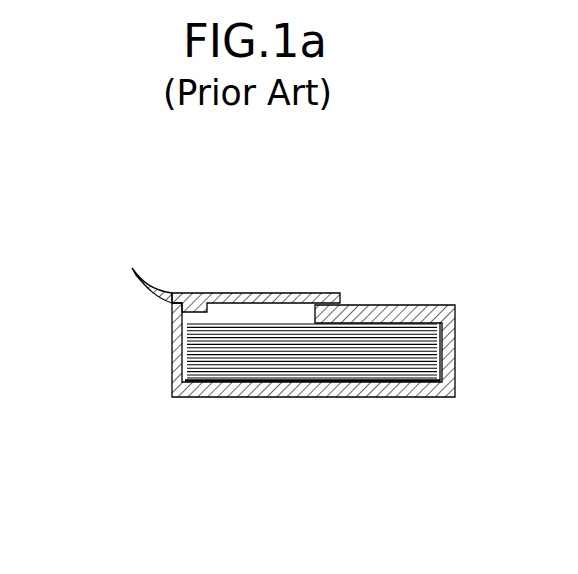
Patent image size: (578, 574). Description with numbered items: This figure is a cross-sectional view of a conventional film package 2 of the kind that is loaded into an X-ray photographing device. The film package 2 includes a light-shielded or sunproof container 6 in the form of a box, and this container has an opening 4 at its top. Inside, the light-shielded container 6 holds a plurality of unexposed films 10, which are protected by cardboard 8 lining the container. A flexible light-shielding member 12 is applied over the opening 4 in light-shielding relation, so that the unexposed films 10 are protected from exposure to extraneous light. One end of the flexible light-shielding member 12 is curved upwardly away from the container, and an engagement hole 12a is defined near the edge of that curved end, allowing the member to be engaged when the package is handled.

The film package 2 is at (325, 258).
The opening 4 is at (258, 318).
The light-shielded container 6 is at (380, 398).
The cardboard 8 is at (452, 352).
The unexposed films 10 is at (256, 366).
The flexible light-shielding member 12 is at (214, 297).
The engagement hole 12a is at (137, 287).